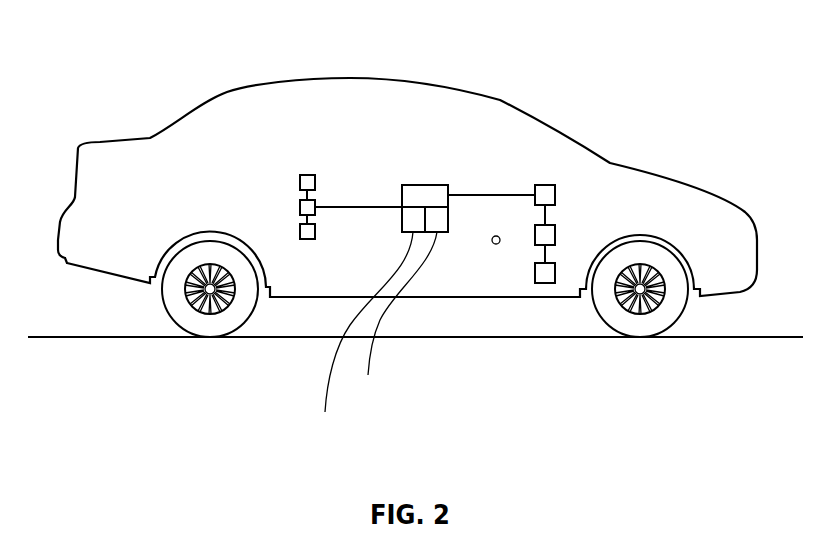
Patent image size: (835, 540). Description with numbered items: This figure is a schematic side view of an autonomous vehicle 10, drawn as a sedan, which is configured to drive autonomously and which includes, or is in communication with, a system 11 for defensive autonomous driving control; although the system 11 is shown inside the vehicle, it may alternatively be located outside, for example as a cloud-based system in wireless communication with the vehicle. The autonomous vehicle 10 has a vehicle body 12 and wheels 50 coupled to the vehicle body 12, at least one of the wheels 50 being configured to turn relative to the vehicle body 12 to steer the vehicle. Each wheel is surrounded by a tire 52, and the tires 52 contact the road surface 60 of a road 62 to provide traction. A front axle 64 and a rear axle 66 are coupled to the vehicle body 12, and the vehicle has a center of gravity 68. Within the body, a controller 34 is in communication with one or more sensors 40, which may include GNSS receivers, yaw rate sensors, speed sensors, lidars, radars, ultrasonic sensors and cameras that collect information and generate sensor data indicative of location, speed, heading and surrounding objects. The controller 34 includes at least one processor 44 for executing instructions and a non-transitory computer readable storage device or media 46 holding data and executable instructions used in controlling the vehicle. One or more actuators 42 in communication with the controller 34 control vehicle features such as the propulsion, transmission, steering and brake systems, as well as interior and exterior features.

The autonomous vehicle 10 is at (540, 124).
The system for defensive autonomous driving control 11 is at (405, 184).
The vehicle body 12 is at (683, 207).
The controller 34 is at (437, 185).
The sensors 40 is at (556, 273).
The actuators 42 is at (300, 232).
The processor 44 is at (362, 339).
The non-transitory computer readable storage device or media 46 is at (396, 320).
The wheels 50 is at (203, 312).
The tire 52 is at (258, 306).
The road surface 60 is at (41, 338).
The road 62 is at (778, 337).
The front axle 64 is at (636, 292).
The rear axle 66 is at (204, 292).
The center of gravity 68 is at (497, 244).